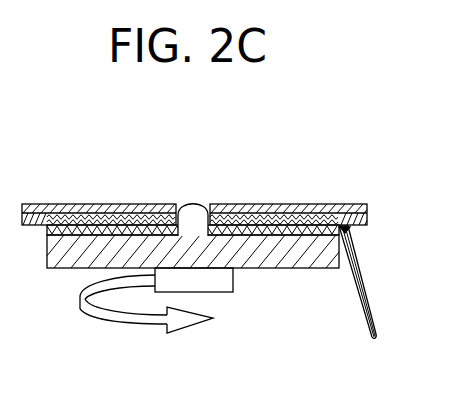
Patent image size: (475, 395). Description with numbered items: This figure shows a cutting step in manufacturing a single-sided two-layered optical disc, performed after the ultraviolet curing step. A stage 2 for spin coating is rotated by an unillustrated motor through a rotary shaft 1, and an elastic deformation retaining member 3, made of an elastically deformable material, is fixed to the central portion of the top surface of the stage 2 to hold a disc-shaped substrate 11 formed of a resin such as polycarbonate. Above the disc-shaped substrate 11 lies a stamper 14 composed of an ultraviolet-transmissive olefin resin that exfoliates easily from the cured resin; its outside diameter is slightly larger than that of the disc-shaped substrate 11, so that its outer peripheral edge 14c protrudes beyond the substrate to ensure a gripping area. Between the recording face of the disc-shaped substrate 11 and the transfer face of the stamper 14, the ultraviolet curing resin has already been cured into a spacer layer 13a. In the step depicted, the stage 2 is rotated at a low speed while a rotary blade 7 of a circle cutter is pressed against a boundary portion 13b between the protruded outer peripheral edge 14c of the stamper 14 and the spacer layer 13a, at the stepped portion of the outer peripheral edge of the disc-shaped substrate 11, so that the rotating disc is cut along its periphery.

The rotary shaft 1 is at (222, 294).
The stage 2 is at (290, 253).
The elastic deformation retaining member 3 is at (201, 207).
The rotary blade 7 is at (368, 292).
The disc-shaped substrate 11 is at (47, 230).
The spacer layer 13a is at (301, 207).
The boundary portion 13b is at (341, 207).
The stamper 14 is at (368, 215).
The outer peripheral edge 14c is at (366, 211).